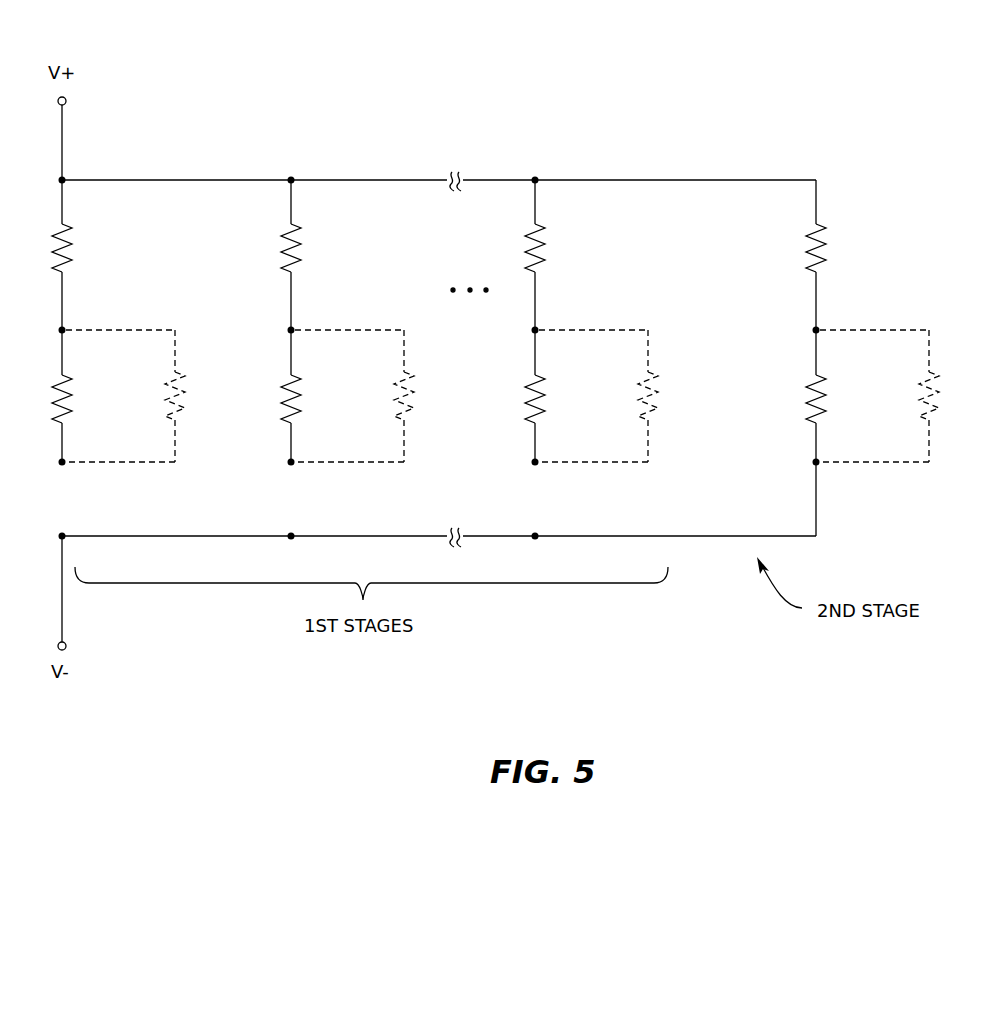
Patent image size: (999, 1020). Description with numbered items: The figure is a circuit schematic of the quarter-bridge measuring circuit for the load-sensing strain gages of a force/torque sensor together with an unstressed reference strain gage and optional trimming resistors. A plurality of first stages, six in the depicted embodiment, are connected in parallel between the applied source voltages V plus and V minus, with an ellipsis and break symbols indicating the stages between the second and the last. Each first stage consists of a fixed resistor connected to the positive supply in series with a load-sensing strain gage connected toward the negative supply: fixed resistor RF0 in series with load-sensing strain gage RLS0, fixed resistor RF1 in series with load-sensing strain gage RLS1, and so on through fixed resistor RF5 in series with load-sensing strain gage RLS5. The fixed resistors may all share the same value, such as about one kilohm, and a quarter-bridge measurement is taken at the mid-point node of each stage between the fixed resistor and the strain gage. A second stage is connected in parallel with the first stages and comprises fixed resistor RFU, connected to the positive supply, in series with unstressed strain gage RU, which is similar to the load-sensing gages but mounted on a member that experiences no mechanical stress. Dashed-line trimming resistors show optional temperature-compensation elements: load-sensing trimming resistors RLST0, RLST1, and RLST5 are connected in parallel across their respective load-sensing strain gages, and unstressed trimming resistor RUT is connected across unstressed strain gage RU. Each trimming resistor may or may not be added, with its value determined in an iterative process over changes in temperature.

The fixed resistor RF0 is at (81, 255).
The load-sensing strain gage RLS0 is at (86, 396).
The load-sensing trimming resistor RLST0 is at (155, 396).
The fixed resistor RF1 is at (310, 255).
The load-sensing strain gage RLS1 is at (315, 396).
The load-sensing trimming resistor RLST1 is at (384, 396).
The fixed resistor RF5 is at (554, 255).
The load-sensing strain gage RLS5 is at (559, 396).
The load-sensing trimming resistor RLST5 is at (628, 396).
The fixed resistor RFU is at (836, 255).
The unstressed strain gage RU is at (832, 433).
The unstressed trimming resistor RUT is at (902, 396).